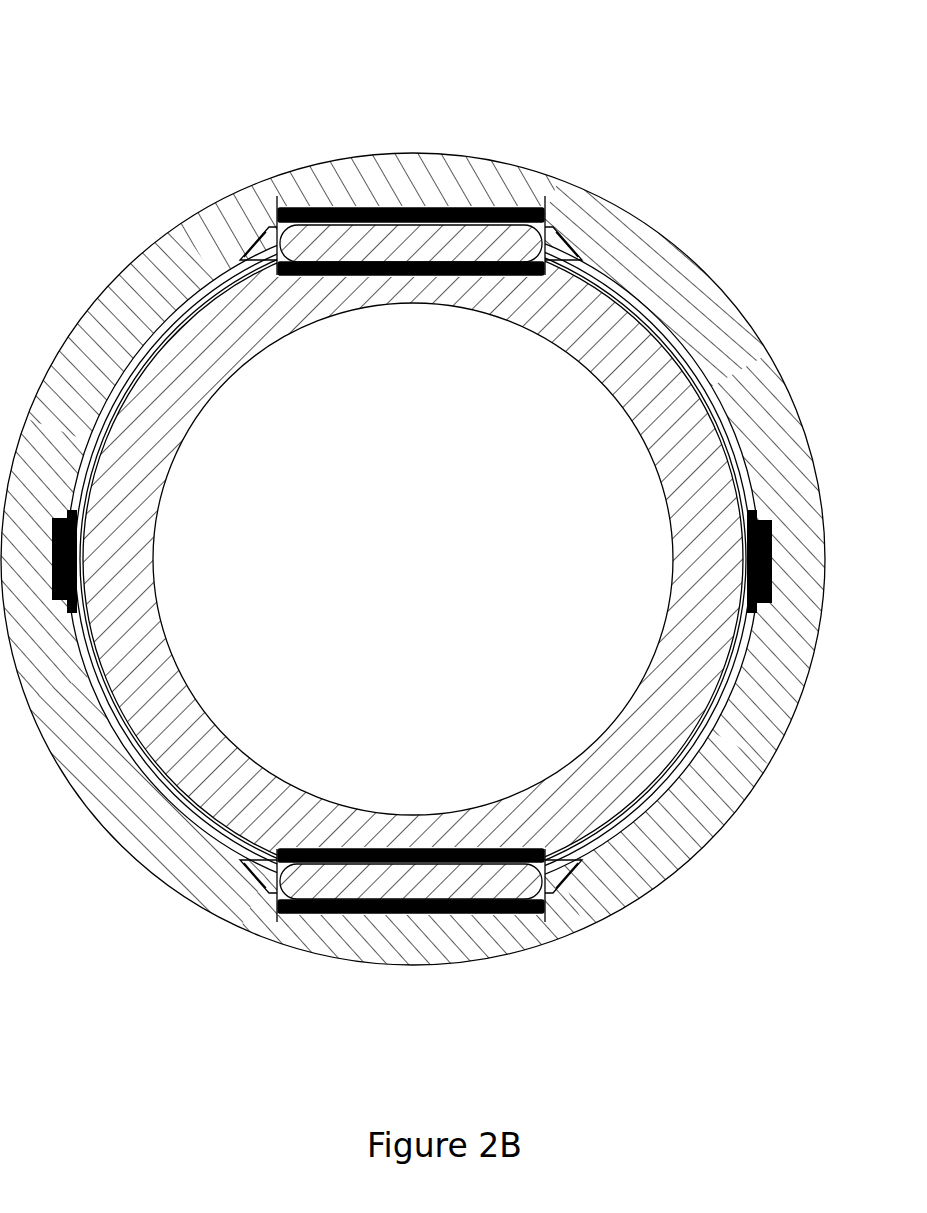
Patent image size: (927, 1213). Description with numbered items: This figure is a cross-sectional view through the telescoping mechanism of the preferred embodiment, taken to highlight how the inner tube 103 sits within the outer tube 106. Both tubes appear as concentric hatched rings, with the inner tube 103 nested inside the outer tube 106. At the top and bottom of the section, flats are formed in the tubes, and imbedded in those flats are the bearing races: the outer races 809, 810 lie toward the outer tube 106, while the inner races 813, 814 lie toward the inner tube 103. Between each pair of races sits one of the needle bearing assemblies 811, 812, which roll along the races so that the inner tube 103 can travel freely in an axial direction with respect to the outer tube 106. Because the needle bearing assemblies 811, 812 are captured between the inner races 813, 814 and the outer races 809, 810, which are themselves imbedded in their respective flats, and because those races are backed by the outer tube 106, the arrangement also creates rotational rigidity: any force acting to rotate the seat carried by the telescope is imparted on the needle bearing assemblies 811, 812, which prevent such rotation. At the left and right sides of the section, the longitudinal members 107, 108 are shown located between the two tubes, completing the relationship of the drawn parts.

The outer tube 106 is at (111, 283).
The inner tube 103 is at (610, 300).
The outer race 809 is at (415, 177).
The inner race 814 is at (344, 230).
The needle bearing assembly 811 is at (488, 224).
The inner race 813 is at (506, 892).
The needle bearing assembly 812 is at (340, 899).
The outer race 810 is at (418, 947).
The longitudinal member 107 is at (65, 640).
The longitudinal member 108 is at (767, 639).